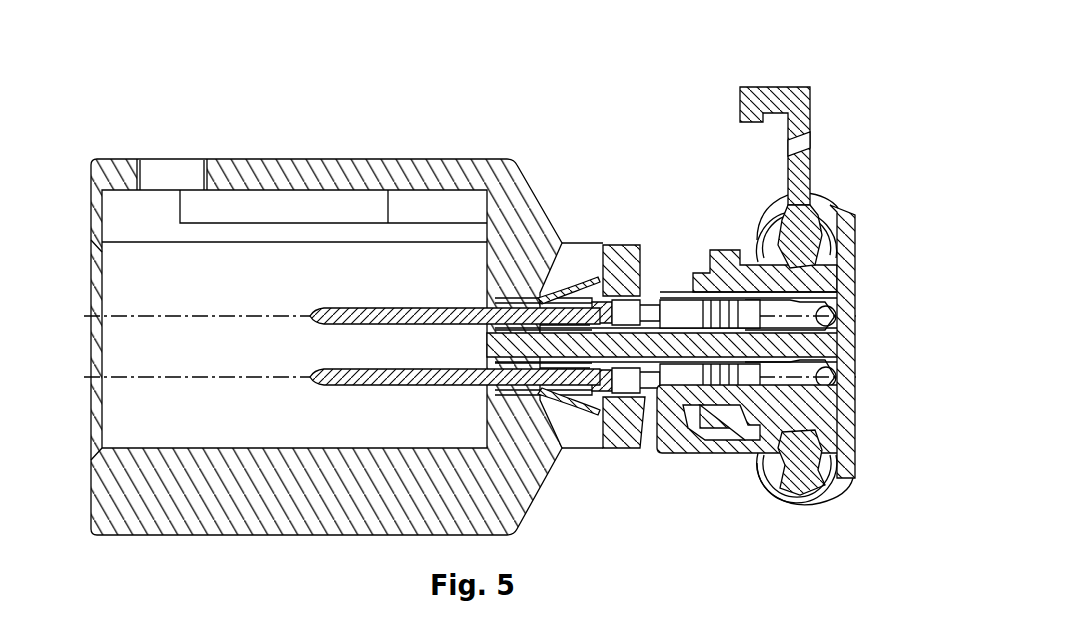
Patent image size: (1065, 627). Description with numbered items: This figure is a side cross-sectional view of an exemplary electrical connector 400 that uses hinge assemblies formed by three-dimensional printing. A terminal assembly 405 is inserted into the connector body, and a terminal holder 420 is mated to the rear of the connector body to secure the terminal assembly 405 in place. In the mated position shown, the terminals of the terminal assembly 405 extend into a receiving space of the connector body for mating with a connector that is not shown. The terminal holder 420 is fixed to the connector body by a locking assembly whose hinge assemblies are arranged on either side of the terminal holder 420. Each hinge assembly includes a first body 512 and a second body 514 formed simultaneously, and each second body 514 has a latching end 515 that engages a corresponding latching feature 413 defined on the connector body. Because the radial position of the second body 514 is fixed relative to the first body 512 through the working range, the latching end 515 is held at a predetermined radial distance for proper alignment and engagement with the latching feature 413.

The electrical connector 400 is at (174, 90).
The terminal assembly 405 is at (390, 289).
The latching feature 413 is at (695, 269).
The terminal holder 420 is at (855, 376).
The first body 512 is at (855, 240).
The second body 514 is at (690, 448).
The latching end 515 is at (770, 96).